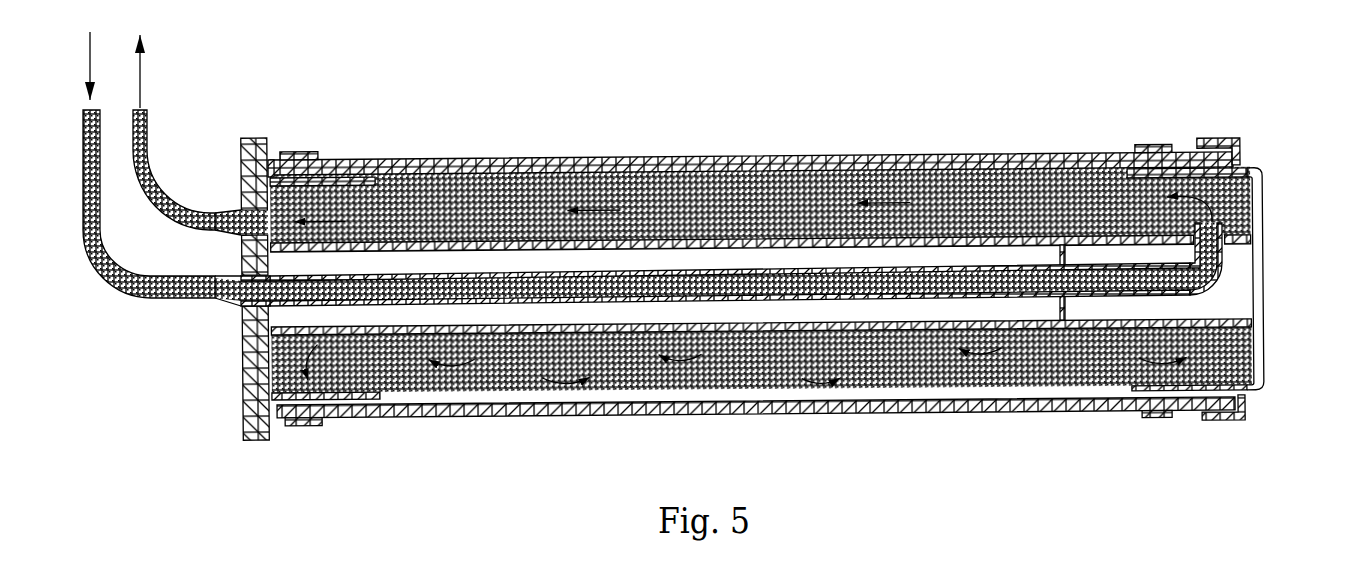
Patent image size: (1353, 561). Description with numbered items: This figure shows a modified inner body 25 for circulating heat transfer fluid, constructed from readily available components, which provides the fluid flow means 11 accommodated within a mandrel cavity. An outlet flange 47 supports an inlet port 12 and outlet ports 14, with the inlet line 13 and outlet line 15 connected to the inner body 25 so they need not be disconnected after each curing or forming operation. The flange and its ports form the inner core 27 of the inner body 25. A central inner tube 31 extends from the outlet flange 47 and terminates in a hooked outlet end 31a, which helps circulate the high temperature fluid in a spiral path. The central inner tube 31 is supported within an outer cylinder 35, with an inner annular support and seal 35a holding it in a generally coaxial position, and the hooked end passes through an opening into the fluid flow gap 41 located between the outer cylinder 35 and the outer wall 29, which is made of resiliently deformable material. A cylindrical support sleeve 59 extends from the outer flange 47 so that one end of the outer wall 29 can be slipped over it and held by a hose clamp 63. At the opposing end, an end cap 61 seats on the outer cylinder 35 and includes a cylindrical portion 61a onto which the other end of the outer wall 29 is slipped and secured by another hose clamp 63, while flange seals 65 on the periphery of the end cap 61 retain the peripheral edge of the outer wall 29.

The fluid flow means 11 is at (212, 173).
The inlet port 12 is at (226, 300).
The inlet line 13 is at (98, 265).
The outlet port 14 is at (232, 231).
The outlet line 15 is at (134, 165).
The inner body 25 is at (442, 86).
The inner core 27 is at (670, 232).
The outer wall 29 is at (780, 160).
The central inner tube 31 is at (723, 268).
The hooked outlet end 31a is at (1224, 226).
The outer cylinder 35 is at (932, 243).
The inner annular support and seal 35a is at (1062, 246).
The fluid flow gap 41 is at (762, 372).
The outlet flange 47 is at (241, 380).
The cylindrical support sleeve 59 is at (368, 380).
The end cap 61 is at (1263, 300).
The cylindrical portion 61a is at (1120, 372).
The hose clamp 63 is at (300, 150).
The flange seal 65 is at (1214, 146).